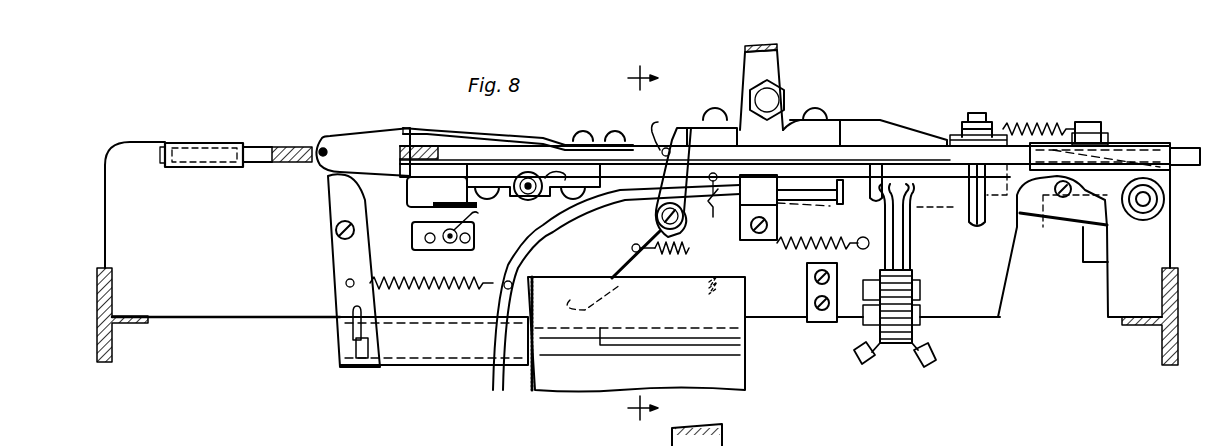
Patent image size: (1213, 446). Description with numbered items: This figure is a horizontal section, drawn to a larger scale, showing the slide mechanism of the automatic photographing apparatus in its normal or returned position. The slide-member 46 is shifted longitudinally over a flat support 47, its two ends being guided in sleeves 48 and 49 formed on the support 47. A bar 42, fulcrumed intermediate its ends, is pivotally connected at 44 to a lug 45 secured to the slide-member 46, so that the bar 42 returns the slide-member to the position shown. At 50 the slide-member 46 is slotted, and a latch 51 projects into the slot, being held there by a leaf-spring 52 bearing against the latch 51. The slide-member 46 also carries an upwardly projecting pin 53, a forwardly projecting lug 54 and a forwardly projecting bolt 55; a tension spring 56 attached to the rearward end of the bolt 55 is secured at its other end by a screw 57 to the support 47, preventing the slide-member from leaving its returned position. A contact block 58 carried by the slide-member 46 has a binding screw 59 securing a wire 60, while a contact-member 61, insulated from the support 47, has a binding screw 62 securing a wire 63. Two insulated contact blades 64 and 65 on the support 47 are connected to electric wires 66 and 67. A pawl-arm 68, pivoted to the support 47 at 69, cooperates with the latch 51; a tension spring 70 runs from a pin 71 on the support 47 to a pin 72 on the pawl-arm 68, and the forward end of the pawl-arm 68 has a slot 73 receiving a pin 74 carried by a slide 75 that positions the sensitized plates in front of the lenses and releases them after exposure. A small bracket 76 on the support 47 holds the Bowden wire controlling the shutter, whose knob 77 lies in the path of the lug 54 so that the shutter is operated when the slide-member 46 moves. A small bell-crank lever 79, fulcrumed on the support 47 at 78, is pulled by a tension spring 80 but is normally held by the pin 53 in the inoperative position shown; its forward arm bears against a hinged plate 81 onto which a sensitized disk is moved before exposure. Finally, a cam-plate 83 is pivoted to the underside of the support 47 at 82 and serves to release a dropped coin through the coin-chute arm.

The bar 42 is at (748, 80).
The pivotal connection 44 is at (772, 100).
The lug 45 is at (783, 133).
The slide-member 46 is at (873, 157).
The support 47 is at (222, 300).
The sleeve 48 is at (200, 143).
The sleeve 49 is at (1140, 150).
The slot 50 is at (316, 162).
The latch 51 is at (346, 150).
The leaf-spring 52 is at (465, 135).
The pin 53 is at (650, 134).
The lug 54 is at (884, 183).
The bolt 55 is at (970, 182).
The tension spring 56 is at (1010, 127).
The screw 57 is at (1090, 122).
The contact block 58 is at (552, 159).
The binding screw 59 is at (525, 200).
The wire 60 is at (569, 175).
The contact-member 61 is at (474, 240).
The binding screw 62 is at (425, 236).
The wire 63 is at (438, 217).
The contact blade 64 is at (882, 222).
The contact blade 65 is at (897, 263).
The electric wire 66 is at (855, 357).
The electric wire 67 is at (936, 356).
The pawl-arm 68 is at (326, 294).
The pivot 69 is at (336, 230).
The tension spring 70 is at (440, 287).
The pin 71 is at (616, 287).
The pin 72 is at (346, 285).
The slot 73 is at (352, 322).
The pin 74 is at (360, 360).
The slide 75 is at (440, 350).
The bracket 76 is at (752, 175).
The knob 77 is at (810, 190).
The fulcrum 78 is at (656, 214).
The bell-crank lever 79 is at (655, 225).
The tension spring 80 is at (795, 258).
The hinged plate 81 is at (640, 300).
The pivot 82 is at (1165, 200).
The cam-plate 83 is at (1105, 267).